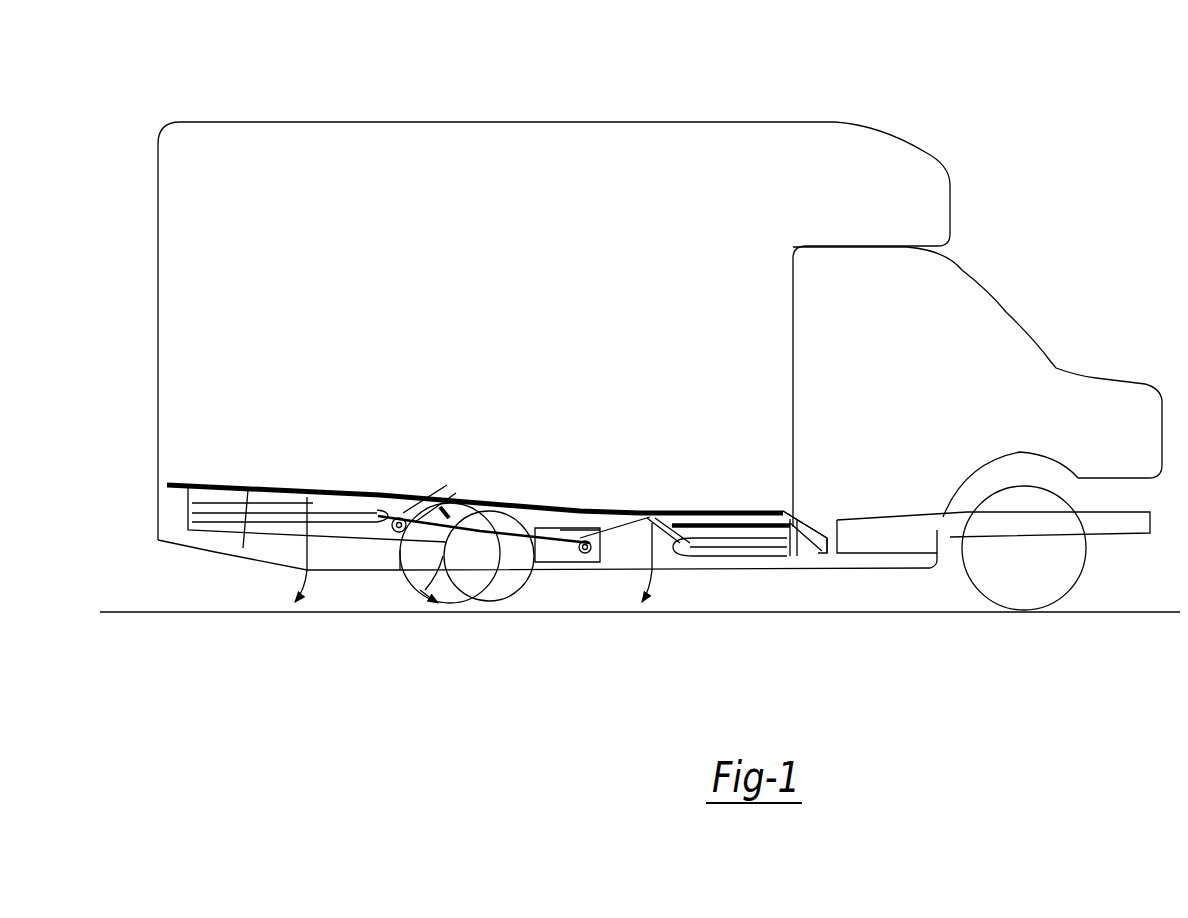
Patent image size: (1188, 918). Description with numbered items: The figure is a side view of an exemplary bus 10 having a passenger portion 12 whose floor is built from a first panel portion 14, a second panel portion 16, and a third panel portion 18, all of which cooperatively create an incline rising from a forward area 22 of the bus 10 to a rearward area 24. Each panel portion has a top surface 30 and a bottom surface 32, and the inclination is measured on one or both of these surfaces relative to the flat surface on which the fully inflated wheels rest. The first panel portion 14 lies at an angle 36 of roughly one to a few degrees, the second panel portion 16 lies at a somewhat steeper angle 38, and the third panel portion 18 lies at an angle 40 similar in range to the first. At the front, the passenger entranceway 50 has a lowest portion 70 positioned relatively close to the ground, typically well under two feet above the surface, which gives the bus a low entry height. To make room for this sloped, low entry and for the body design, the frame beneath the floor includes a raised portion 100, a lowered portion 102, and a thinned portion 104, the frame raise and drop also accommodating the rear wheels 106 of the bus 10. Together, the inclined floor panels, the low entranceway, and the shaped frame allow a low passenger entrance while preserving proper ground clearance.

The bus 10 is at (1023, 161).
The passenger portion 12 is at (641, 113).
The first panel portion 14 is at (622, 492).
The second panel portion 16 is at (459, 486).
The third panel portion 18 is at (319, 480).
The forward area 22 is at (681, 484).
The rearward area 24 is at (174, 480).
The top surface 30 is at (251, 479).
The bottom surface 32 is at (248, 497).
The angle 36 is at (657, 578).
The angle 38 is at (420, 597).
The angle 40 is at (305, 572).
The passenger entranceway 50 is at (755, 568).
The lowest portion 70 is at (725, 558).
The raised portion 100 is at (785, 562).
The lowered portion 102 is at (591, 572).
The thinned portion 104 is at (376, 553).
The rear wheels 106 is at (456, 615).